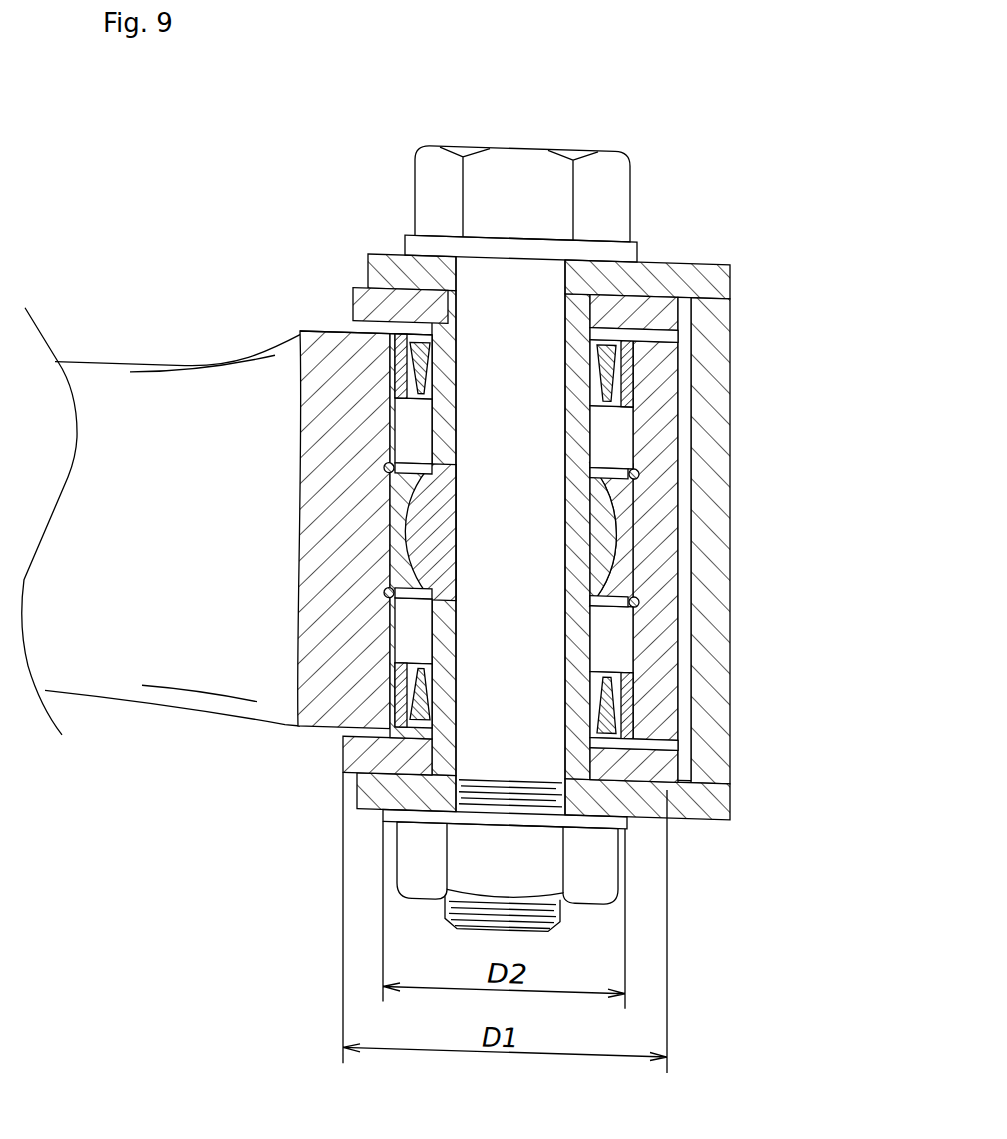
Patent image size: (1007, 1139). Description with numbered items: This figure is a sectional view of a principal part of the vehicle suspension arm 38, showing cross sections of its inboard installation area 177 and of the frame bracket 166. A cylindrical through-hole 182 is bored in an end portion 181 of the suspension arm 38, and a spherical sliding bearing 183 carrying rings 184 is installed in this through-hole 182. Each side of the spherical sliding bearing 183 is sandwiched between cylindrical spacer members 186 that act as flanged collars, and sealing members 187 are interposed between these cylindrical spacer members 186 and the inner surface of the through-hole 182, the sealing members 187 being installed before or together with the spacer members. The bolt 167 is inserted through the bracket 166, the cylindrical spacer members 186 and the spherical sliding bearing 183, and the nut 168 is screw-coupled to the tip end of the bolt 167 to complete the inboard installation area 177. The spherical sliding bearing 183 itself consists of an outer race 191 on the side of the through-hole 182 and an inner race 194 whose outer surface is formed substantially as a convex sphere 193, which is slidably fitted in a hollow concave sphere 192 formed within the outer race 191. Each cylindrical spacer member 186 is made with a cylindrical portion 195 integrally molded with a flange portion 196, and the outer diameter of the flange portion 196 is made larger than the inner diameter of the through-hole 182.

The suspension arm 38 is at (201, 363).
The frame bracket 166 is at (700, 256).
The bolt 167 is at (512, 148).
The nut 168 is at (619, 860).
The inboard installation area 177 is at (299, 670).
The end portion 181 is at (330, 696).
The through-hole 182 is at (400, 421).
The spherical sliding bearing 183 is at (662, 510).
The rings 184 is at (383, 471).
The cylindrical spacer members 186 is at (611, 442).
The sealing members 187 is at (628, 373).
The outer race 191 is at (610, 545).
The hollow concave sphere 192 is at (565, 505).
The convex sphere 193 is at (640, 583).
The inner race 194 is at (562, 561).
The cylindrical portion 195 is at (595, 420).
The flange portion 196 is at (686, 306).